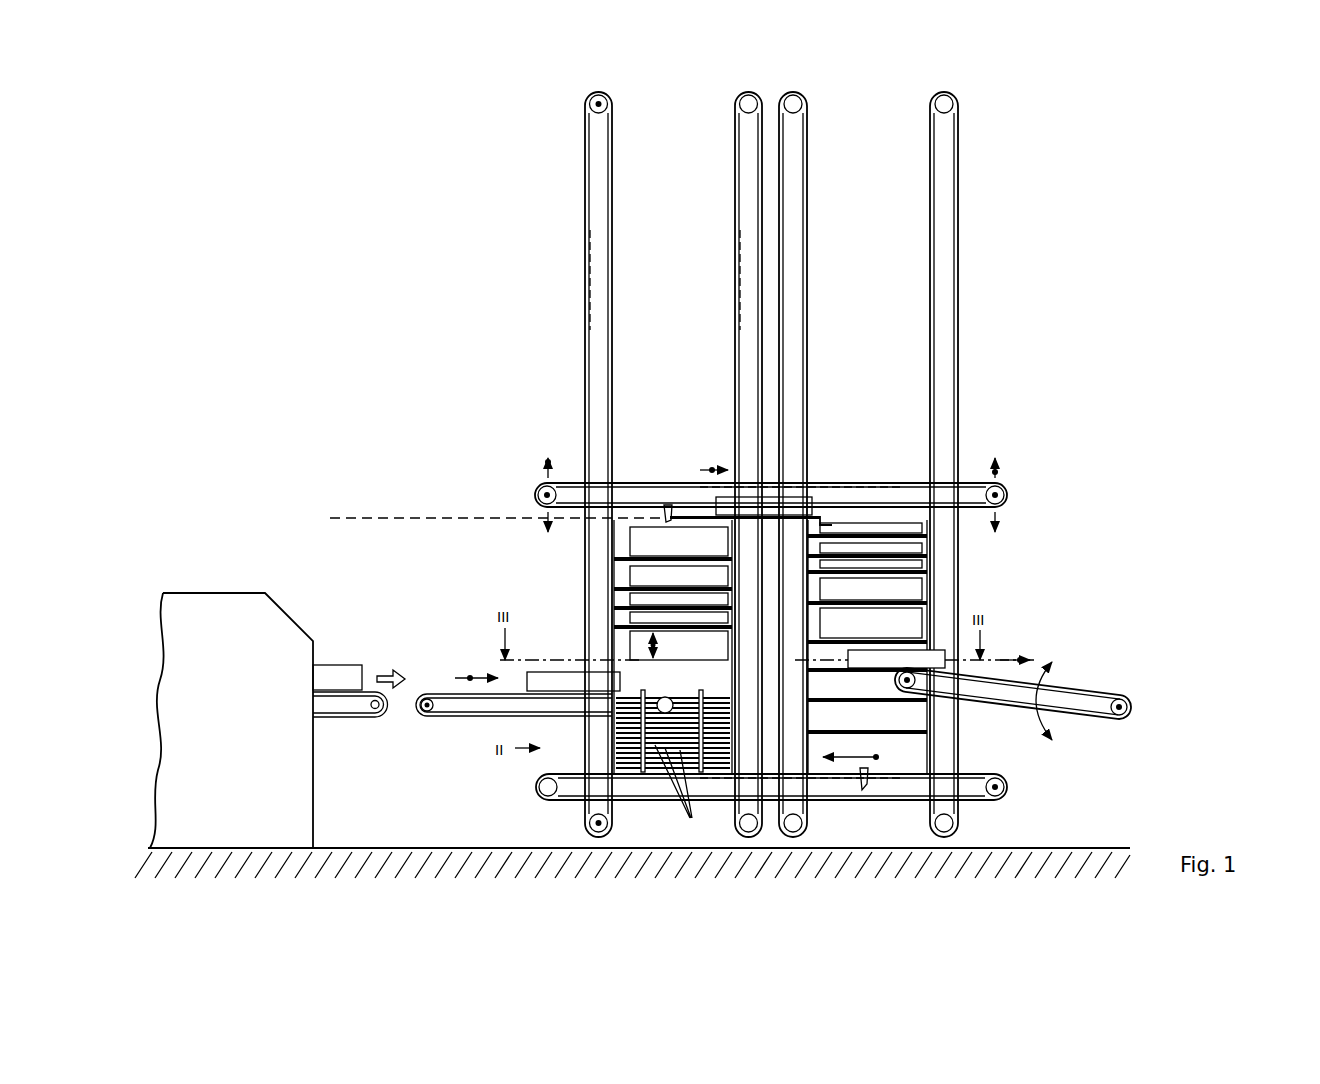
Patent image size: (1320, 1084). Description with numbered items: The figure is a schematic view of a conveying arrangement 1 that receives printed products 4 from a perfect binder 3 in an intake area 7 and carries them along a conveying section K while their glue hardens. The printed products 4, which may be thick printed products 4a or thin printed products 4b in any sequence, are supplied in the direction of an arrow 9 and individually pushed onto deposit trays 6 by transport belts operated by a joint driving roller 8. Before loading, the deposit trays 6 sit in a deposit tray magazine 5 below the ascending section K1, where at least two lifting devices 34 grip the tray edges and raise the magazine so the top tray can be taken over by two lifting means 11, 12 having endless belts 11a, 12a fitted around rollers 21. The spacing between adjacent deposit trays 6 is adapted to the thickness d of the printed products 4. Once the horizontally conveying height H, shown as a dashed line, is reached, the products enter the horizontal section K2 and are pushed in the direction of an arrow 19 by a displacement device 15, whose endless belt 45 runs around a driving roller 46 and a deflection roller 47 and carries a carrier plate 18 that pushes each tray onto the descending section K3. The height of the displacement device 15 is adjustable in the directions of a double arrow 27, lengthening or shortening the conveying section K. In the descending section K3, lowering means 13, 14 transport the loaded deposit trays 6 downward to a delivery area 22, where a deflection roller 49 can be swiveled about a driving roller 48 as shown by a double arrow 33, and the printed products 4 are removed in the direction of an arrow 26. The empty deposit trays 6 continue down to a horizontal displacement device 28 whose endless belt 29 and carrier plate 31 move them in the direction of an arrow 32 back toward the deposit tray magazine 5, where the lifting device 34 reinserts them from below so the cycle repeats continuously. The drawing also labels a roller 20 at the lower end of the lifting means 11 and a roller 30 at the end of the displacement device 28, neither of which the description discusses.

The conveying arrangement 1 is at (1007, 368).
The perfect binder 3 is at (204, 593).
The printed products 4 is at (340, 665).
The thick printed products 4a is at (637, 641).
The thin printed products 4b is at (637, 617).
The deposit tray magazine 5 is at (612, 741).
The deposit tray 6 is at (680, 790).
The intake area 7 is at (462, 718).
The joint driving roller 8 is at (424, 716).
The arrow 9 is at (470, 678).
The lifting means 11 is at (587, 196).
The endless belt 11a is at (605, 283).
The lifting means 12 is at (737, 183).
The endless belt 12a is at (749, 262).
The lowering means 13 is at (805, 207).
The lowering means 14 is at (955, 152).
The displacement device 15 is at (540, 484).
The carrier plate 18 is at (668, 503).
The arrow 19 is at (712, 470).
The lower deflection roller 20 is at (597, 823).
The rollers 21 is at (596, 102).
The delivery area 22 is at (1103, 690).
The arrow 26 is at (1020, 657).
The double arrow 27 is at (548, 462).
The horizontal displacement device 28 is at (978, 800).
The endless belt 29 is at (972, 774).
The deflection roller 30 is at (995, 787).
The carrier plate 31 is at (862, 790).
The arrow 32 is at (876, 757).
The double arrow 33 is at (1042, 665).
The lifting device 34 is at (700, 692).
The endless belt 45 is at (965, 482).
The driving roller 46 is at (546, 495).
The deflection roller 47 is at (1000, 493).
The driving roller 48 is at (1122, 705).
The deflection roller 49 is at (905, 680).
The conveying section K is at (853, 512).
The ascending section K1 is at (618, 549).
The horizontal section K2 is at (915, 517).
The descending section K3 is at (925, 566).
The horizontally conveying height H is at (345, 511).
The thickness d is at (658, 650).